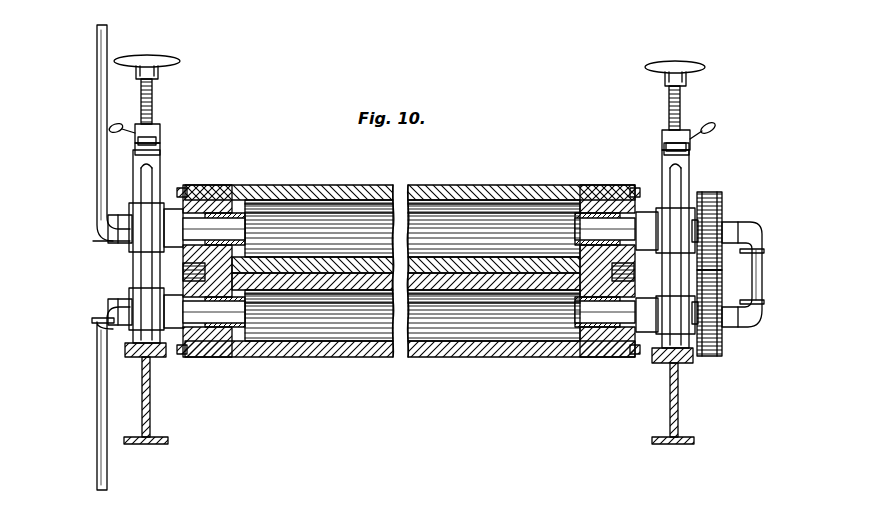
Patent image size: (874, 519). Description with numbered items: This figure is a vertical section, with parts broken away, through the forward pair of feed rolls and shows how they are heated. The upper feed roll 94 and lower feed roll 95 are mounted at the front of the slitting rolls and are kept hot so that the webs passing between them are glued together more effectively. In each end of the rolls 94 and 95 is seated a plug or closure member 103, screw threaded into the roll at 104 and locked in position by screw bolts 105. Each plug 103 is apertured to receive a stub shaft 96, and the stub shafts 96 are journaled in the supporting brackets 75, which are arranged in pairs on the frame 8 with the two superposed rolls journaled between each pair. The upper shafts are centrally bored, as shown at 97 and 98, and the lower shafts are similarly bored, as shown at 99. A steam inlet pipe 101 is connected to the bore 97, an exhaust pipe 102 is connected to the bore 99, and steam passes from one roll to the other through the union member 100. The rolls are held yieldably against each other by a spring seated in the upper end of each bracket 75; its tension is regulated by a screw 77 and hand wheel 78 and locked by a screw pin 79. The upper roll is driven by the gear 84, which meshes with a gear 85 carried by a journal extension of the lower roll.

The frame 8 is at (150, 415).
The bracket 75 is at (133, 268).
The screw 77 is at (152, 100).
The hand wheel 78 is at (176, 62).
The screw pin 79 is at (110, 131).
The gear 84 is at (718, 196).
The gear 85 is at (723, 340).
The feed roll 94 is at (356, 186).
The feed roll 95 is at (408, 357).
The stub shaft 96 is at (645, 212).
The bore 97 is at (240, 222).
The bore 98 is at (580, 230).
The bore 99 is at (245, 318).
The union member 100 is at (762, 270).
The steam inlet pipe 101 is at (97, 184).
The exhaust pipe 102 is at (97, 393).
The plug 103 is at (225, 200).
The screw thread 104 is at (232, 216).
The screw bolt 105 is at (181, 188).